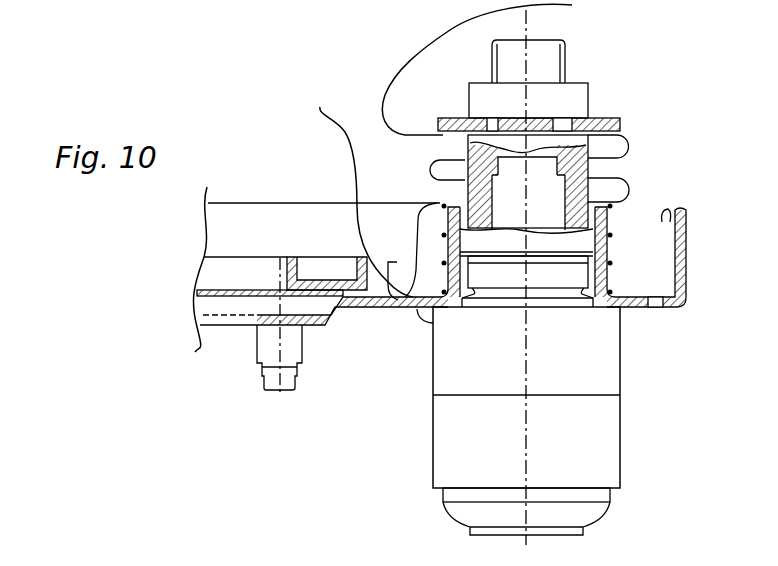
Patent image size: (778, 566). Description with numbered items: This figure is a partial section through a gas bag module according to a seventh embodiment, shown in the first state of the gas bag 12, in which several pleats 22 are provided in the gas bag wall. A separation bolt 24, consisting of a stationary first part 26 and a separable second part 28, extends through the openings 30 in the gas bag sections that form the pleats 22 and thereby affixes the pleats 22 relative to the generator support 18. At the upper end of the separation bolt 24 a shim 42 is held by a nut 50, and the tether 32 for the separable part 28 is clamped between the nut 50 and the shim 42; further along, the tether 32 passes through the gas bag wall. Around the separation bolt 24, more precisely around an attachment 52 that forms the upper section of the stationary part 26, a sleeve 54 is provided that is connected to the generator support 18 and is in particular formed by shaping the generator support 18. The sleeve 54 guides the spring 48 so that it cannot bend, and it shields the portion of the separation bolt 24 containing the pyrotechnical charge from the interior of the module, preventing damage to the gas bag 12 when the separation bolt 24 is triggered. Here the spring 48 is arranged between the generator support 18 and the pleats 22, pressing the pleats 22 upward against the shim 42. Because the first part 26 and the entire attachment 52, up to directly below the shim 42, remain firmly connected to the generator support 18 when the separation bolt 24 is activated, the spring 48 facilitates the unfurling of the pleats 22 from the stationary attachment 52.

The gas bag 12 is at (450, 32).
The generator support 18 is at (687, 255).
The pleats 22 is at (636, 178).
The separation bolt 24 is at (625, 540).
The first part 26 is at (445, 447).
The second part 28 is at (547, 67).
The openings 30 is at (455, 187).
The tether 32 is at (417, 117).
The shim 42 is at (620, 124).
The spring 48 is at (610, 232).
The nut 50 is at (577, 101).
The attachment 52 is at (468, 140).
The sleeve 54 is at (612, 279).